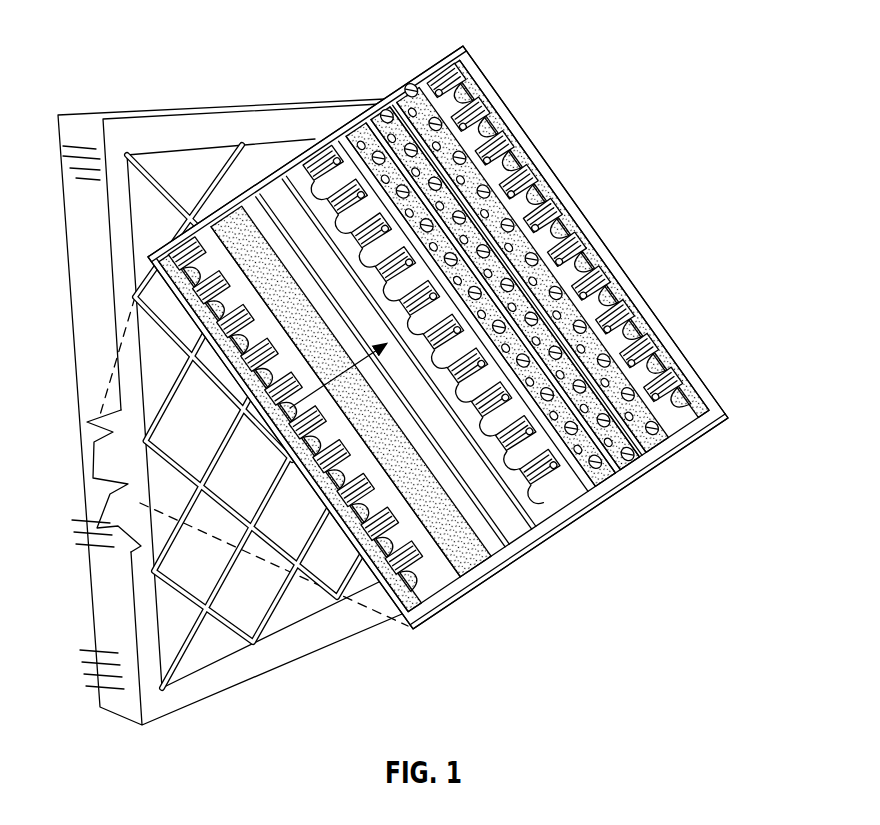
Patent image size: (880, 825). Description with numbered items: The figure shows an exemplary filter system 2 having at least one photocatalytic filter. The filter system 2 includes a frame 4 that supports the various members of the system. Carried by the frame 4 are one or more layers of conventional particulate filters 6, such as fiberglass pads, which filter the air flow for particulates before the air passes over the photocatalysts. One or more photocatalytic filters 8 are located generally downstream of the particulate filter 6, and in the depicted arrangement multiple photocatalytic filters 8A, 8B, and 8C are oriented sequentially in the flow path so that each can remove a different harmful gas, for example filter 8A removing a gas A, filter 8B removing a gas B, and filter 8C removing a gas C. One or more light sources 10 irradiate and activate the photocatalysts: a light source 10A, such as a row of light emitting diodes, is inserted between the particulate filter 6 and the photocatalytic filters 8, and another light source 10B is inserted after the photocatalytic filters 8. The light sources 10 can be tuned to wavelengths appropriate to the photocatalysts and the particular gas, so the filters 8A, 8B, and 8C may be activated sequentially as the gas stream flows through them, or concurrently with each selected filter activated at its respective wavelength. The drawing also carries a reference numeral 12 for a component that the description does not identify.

The filter system 2 is at (412, 364).
The frame 4 is at (418, 618).
The particulate filter 6 is at (554, 548).
The photocatalytic filter 8 is at (532, 268).
The photocatalytic filter 8A is at (607, 478).
The photocatalytic filter 8B is at (648, 451).
The photocatalytic filter 8C is at (663, 440).
The light source 10 is at (556, 176).
The light source 10A is at (574, 498).
The light source 10B is at (688, 392).
The pleated filter layer 12 is at (294, 437).